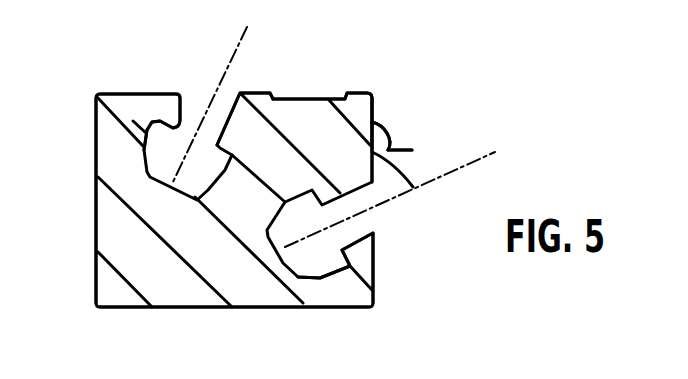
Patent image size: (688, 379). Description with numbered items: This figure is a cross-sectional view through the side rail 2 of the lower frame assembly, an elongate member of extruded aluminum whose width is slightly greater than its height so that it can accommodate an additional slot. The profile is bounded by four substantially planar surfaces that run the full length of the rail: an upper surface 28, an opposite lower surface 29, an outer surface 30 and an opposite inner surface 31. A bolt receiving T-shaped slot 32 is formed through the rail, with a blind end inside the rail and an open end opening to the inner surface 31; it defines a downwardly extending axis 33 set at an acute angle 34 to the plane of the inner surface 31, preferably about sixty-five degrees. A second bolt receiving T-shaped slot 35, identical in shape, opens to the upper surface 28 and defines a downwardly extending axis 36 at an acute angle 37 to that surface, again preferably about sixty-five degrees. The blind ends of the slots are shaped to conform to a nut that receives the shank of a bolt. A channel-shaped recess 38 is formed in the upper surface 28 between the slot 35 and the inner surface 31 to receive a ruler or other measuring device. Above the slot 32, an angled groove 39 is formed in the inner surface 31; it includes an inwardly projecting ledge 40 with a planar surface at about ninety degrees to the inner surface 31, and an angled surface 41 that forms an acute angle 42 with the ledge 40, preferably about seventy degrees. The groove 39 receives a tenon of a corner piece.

The side rail 2 is at (385, 322).
The upper surface 28 is at (152, 92).
The lower surface 29 is at (202, 307).
The outer surface 30 is at (97, 233).
The inner surface 31 is at (377, 278).
The bolt receiving T-shaped slot 32 is at (295, 283).
The axis 33 is at (385, 205).
The acute angle 34 is at (380, 163).
The second bolt receiving T-shaped slot 35 is at (103, 118).
The axis 36 is at (225, 65).
The acute angle 37 is at (260, 92).
The channel-shaped recess 38 is at (303, 95).
The angled groove 39 is at (390, 117).
The inwardly projecting ledge 40 is at (364, 146).
The angled surface 41 is at (380, 115).
The acute angle 42 is at (388, 130).